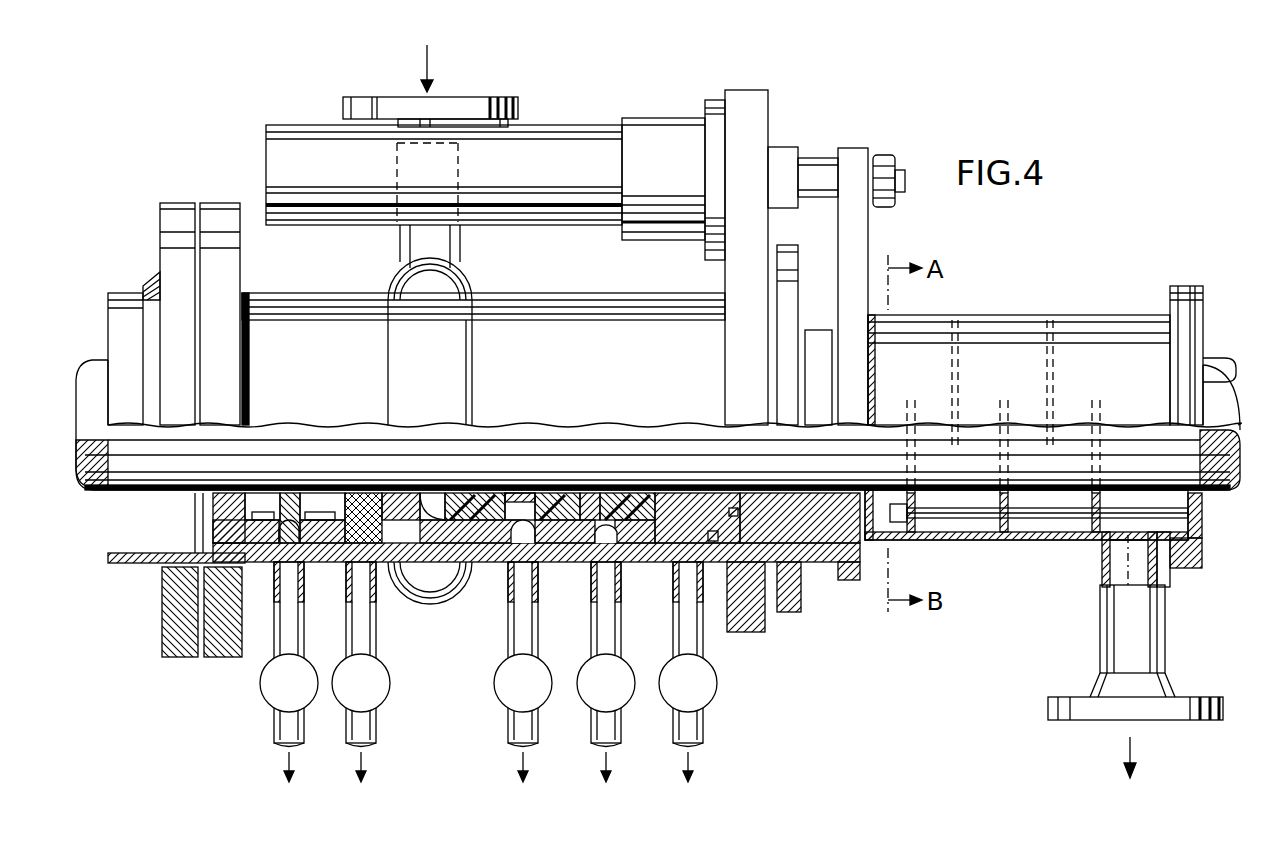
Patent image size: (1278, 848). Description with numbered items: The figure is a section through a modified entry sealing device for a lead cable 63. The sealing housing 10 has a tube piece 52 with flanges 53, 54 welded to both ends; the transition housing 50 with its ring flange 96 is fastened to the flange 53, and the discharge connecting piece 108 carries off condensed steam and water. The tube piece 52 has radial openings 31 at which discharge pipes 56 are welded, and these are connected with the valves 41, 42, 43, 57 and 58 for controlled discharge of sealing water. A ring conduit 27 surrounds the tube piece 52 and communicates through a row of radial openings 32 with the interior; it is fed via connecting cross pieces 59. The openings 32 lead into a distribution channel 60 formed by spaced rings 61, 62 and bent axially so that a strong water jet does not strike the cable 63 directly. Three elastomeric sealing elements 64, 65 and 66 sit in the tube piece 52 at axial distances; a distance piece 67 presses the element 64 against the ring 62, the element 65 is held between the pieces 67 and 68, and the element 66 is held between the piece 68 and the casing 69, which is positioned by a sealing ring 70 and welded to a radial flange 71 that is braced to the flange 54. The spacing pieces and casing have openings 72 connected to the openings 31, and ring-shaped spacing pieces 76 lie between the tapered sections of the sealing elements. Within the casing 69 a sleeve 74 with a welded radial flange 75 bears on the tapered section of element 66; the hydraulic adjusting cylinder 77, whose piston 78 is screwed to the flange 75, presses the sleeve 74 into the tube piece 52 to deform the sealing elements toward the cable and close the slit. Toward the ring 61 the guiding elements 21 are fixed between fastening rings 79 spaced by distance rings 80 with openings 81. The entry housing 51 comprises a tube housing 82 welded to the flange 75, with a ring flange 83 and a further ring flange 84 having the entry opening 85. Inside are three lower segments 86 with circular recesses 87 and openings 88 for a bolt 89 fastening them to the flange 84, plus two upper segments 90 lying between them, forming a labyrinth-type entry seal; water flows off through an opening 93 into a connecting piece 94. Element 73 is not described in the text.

The sealing housing 10 is at (576, 288).
The guiding elements 21 is at (322, 493).
The ring conduit 27 is at (430, 598).
The radial openings 31 is at (345, 565).
The radial openings 32 is at (404, 572).
The valve 41 is at (502, 695).
The valve 42 is at (590, 695).
The valve 43 is at (675, 695).
The transition housing 50 is at (138, 585).
The entry housing 51 is at (1032, 312).
The tube piece 52 is at (473, 562).
The flange 53 is at (226, 657).
The flange 54 is at (748, 632).
The discharge pipes 56 is at (350, 640).
The valve 57 is at (374, 693).
The valve 58 is at (272, 695).
The connecting cross pieces 59 is at (490, 103).
The distribution channel 60 is at (432, 500).
The ring 61 is at (398, 493).
The ring 62 is at (465, 493).
The lead cable 63 is at (1232, 372).
The sealing element 64 is at (516, 500).
The sealing element 65 is at (565, 500).
The sealing element 66 is at (640, 500).
The distance piece 67 is at (500, 545).
The spacing piece 68 is at (528, 545).
The casing 69 is at (612, 545).
The sealing ring 70 is at (713, 531).
The radial flange 71 is at (789, 613).
The openings 72 is at (618, 585).
The pin 73 is at (734, 508).
The sleeve 74 is at (780, 515).
The radial flange 75 is at (850, 580).
The spacing pieces 76 is at (595, 500).
The hydraulic adjusting cylinder 77 is at (590, 128).
The piston 78 is at (816, 165).
The fastening rings 79 is at (255, 478).
The distance rings 80 is at (268, 493).
The openings 81 is at (270, 560).
The tube housing 82 is at (1042, 540).
The ring flange 83 is at (1172, 572).
The ring flange 84 is at (1202, 556).
The entry opening 85 is at (1202, 500).
The lower radial segments 86 is at (915, 532).
The circular recesses 87 is at (906, 464).
The openings 88 is at (910, 506).
The bolt 89 is at (1030, 508).
The upper segments 90 is at (1056, 360).
The opening 93 is at (1142, 538).
The connecting piece 94 is at (1112, 632).
The ring flange 96 is at (172, 648).
The discharge connecting piece 108 is at (525, 493).